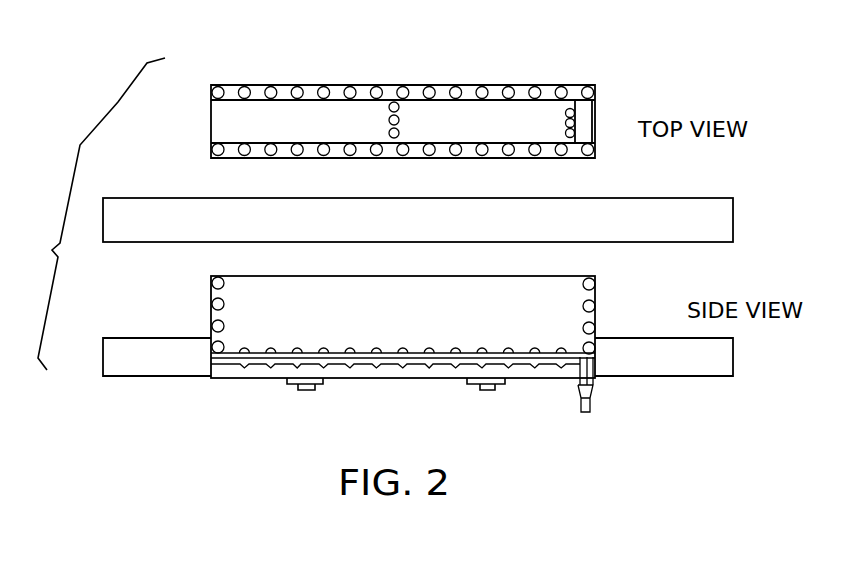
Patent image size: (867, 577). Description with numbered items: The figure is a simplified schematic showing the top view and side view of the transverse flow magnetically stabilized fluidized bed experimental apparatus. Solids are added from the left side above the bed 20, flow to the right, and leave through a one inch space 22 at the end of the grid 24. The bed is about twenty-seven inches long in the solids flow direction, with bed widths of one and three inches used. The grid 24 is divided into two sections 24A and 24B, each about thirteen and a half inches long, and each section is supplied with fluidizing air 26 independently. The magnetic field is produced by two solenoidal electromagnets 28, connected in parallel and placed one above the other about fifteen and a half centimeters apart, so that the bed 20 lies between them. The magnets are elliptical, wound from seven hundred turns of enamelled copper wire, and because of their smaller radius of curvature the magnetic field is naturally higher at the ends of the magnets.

The bed 20 is at (233, 290).
The space 22 is at (592, 383).
The grid 24 is at (423, 352).
The first grid section 24A is at (310, 113).
The second grid section 24B is at (510, 117).
The fluidizing air 26 is at (297, 391).
The solenoidal electromagnets 28 is at (165, 220).